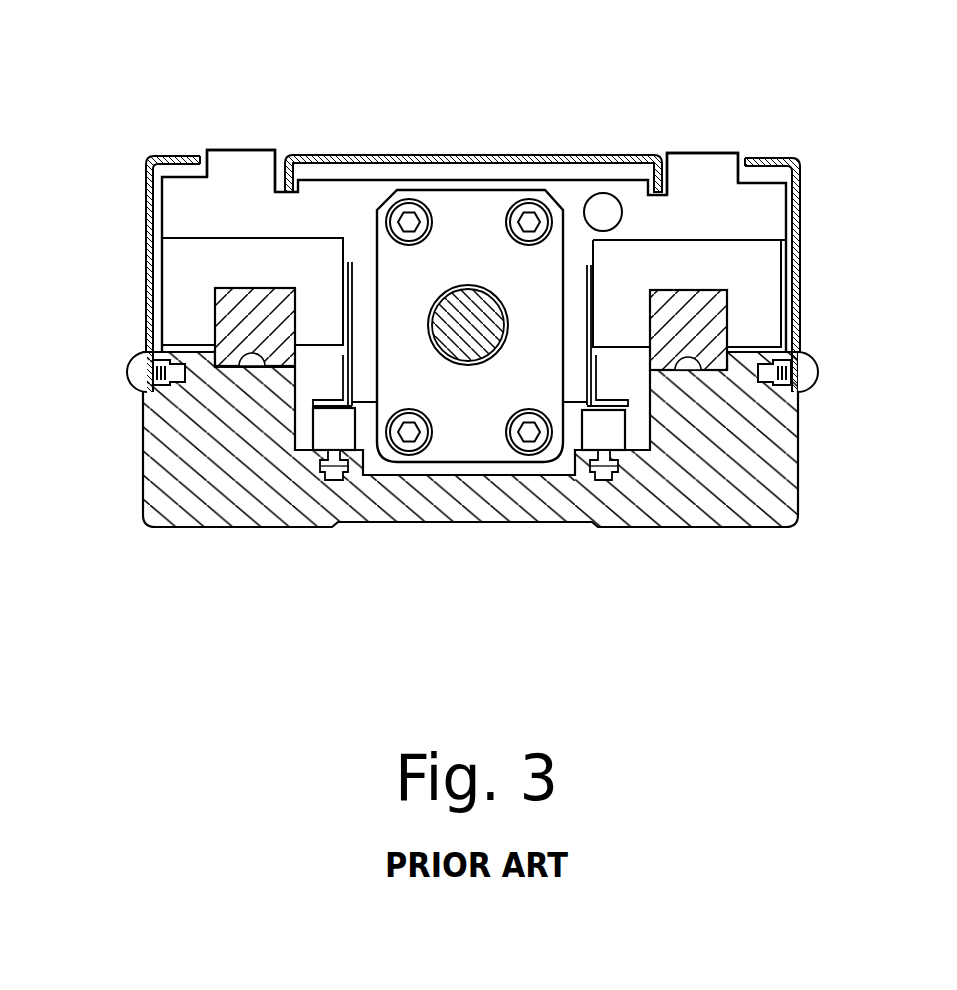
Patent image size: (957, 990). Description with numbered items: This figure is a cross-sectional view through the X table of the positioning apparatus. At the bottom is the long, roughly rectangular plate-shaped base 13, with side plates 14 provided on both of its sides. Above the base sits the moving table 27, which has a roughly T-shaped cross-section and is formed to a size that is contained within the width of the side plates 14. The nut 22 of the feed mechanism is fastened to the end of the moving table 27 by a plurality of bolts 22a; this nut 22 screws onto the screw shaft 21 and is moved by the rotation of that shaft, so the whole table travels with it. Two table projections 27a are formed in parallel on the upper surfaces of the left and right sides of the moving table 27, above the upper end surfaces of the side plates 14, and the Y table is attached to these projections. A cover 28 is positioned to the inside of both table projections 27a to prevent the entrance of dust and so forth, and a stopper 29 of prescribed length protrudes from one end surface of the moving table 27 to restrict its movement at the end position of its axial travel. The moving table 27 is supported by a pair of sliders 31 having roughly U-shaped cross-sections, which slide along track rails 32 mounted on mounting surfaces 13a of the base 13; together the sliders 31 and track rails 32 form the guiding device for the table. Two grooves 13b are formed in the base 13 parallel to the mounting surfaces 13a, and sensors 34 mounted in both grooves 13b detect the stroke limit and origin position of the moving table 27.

The base 13 is at (430, 503).
The mounting surfaces 13a is at (252, 357).
The grooves 13b is at (600, 483).
The side plates 14 is at (150, 280).
The screw shaft 21 is at (467, 335).
The nut 22 is at (488, 208).
The bolts 22a is at (410, 208).
The moving table 27 is at (330, 185).
The table projections 27a is at (245, 160).
The cover 28 is at (453, 160).
The stopper 29 is at (608, 203).
The sliders 31 is at (178, 253).
The track rails 32 is at (218, 310).
The sensors 34 is at (333, 472).